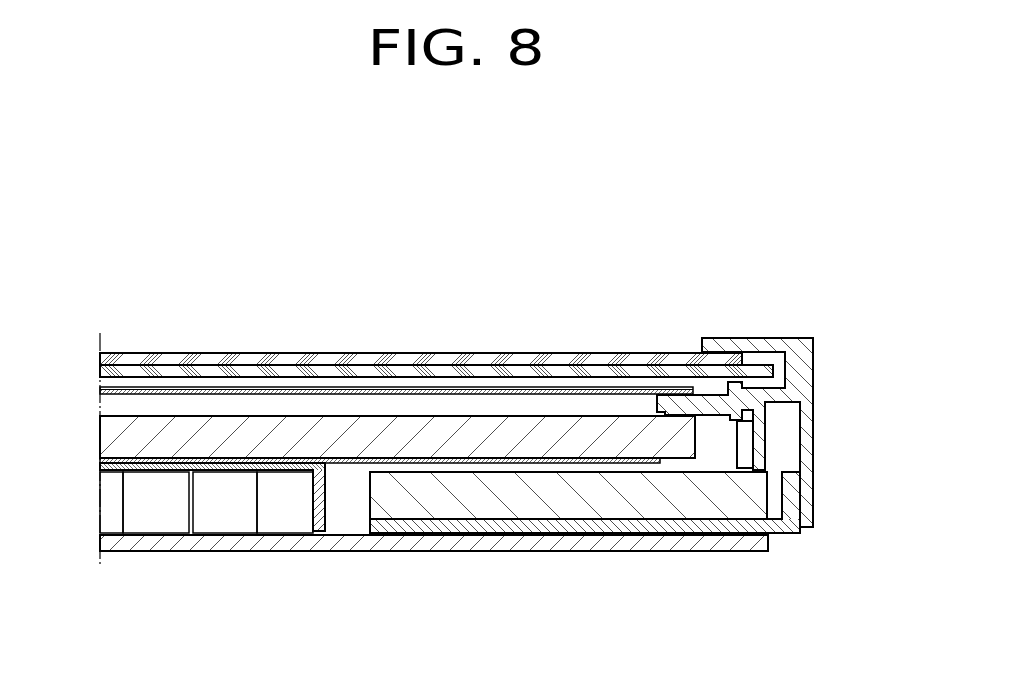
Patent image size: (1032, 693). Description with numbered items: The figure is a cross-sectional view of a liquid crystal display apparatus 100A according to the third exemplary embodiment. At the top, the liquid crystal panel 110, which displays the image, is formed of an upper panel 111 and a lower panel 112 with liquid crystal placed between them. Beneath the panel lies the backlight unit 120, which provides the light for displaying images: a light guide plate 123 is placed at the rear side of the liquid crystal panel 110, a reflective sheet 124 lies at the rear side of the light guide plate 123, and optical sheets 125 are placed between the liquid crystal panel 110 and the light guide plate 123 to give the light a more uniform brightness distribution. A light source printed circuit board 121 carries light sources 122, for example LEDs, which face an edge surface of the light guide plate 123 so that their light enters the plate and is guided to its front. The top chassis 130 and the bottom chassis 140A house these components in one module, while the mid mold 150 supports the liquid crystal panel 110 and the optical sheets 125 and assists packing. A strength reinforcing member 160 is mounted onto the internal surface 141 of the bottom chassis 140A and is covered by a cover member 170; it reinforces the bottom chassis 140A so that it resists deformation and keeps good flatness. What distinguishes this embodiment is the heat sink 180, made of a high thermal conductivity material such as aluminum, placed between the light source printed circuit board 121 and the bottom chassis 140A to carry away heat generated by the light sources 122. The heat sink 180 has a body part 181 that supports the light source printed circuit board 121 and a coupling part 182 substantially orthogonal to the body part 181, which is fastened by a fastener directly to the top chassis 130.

The liquid crystal display apparatus 100A is at (404, 207).
The liquid crystal panel 110 is at (261, 339).
The upper panel 111 is at (100, 359).
The lower panel 112 is at (100, 366).
The backlight unit 120 is at (677, 298).
The light source printed circuit board 121 is at (565, 483).
The light source 122 is at (745, 447).
The light guide plate 123 is at (448, 426).
The reflective sheet 124 is at (496, 457).
The optical sheets 125 is at (382, 387).
The top chassis 130 is at (829, 387).
The bottom chassis 140A is at (461, 563).
The internal surface 141 is at (357, 533).
The mid mold 150 is at (776, 384).
The strength reinforcing member 160 is at (176, 500).
The cover member 170 is at (339, 522).
The heat sink 180 is at (549, 545).
The body part 181 is at (613, 527).
The coupling part 182 is at (792, 499).